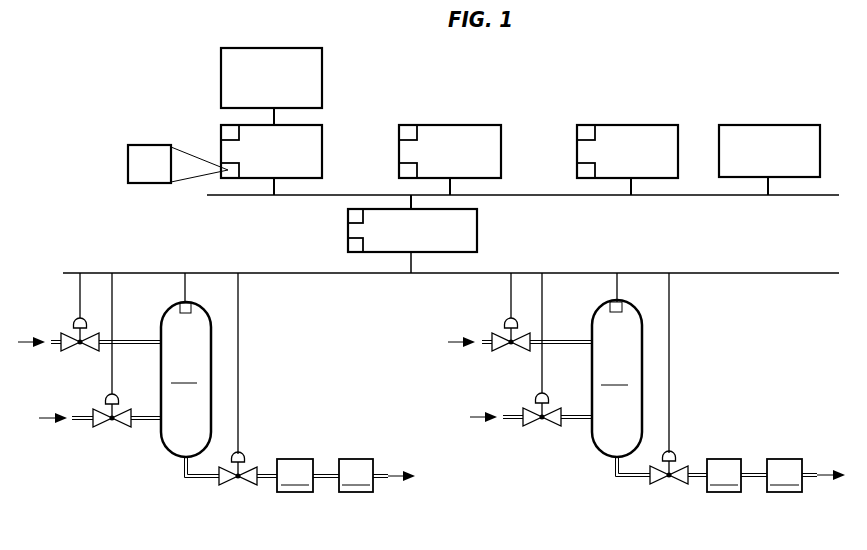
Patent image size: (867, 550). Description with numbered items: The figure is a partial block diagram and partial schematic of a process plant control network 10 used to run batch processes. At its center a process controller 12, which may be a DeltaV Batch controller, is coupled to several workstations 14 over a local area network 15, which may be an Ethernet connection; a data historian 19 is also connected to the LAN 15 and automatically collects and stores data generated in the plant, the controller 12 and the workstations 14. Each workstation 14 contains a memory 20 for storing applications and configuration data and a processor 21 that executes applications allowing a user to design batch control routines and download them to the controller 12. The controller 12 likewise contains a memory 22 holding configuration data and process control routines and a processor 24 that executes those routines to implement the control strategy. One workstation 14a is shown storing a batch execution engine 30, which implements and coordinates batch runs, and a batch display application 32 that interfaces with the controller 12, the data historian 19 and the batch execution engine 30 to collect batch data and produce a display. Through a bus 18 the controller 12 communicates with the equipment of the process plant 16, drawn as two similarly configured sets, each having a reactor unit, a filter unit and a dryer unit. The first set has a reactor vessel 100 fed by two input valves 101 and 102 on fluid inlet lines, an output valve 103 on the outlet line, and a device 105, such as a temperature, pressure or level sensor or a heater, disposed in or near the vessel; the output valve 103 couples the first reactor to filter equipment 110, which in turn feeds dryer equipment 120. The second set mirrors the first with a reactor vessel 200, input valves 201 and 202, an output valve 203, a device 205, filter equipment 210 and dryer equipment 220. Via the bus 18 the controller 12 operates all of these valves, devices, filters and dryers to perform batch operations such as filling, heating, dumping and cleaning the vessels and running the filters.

The process plant control network 10 is at (116, 91).
The process controller 12 is at (412, 224).
The workstations 14 is at (501, 150).
The workstation 14a is at (323, 153).
The local area network 15 is at (285, 196).
The process plant 16 is at (77, 237).
The bus 18 is at (413, 263).
The data historian 19 is at (820, 150).
The memory 20 is at (224, 179).
The processor 21 is at (222, 132).
The memory 22 is at (348, 245).
The processor 24 is at (348, 213).
The batch execution engine 30 is at (323, 77).
The batch display application 32 is at (128, 160).
The reactor vessel 100 is at (176, 365).
The input valve 101 is at (67, 351).
The input valve 102 is at (97, 427).
The output valve 103 is at (225, 483).
The device 105 is at (180, 305).
The filter equipment 110 is at (308, 475).
The dryer equipment 120 is at (377, 475).
The reactor vessel 200 is at (607, 365).
The input valve 201 is at (498, 351).
The input valve 202 is at (528, 426).
The output valve 203 is at (656, 482).
The device 205 is at (608, 303).
The filter equipment 210 is at (737, 475).
The dryer equipment 220 is at (806, 475).